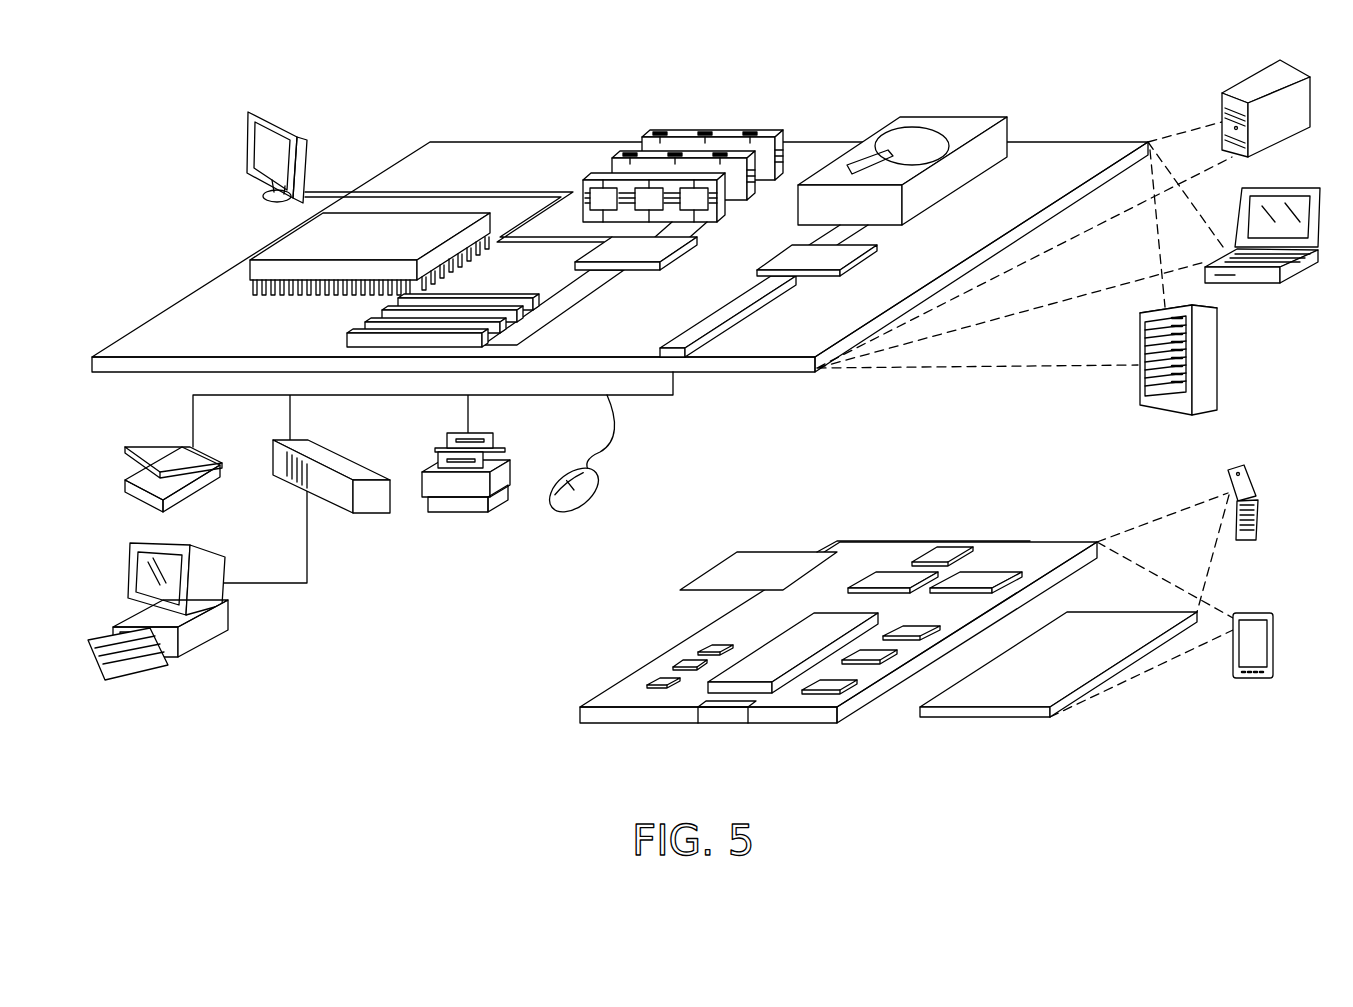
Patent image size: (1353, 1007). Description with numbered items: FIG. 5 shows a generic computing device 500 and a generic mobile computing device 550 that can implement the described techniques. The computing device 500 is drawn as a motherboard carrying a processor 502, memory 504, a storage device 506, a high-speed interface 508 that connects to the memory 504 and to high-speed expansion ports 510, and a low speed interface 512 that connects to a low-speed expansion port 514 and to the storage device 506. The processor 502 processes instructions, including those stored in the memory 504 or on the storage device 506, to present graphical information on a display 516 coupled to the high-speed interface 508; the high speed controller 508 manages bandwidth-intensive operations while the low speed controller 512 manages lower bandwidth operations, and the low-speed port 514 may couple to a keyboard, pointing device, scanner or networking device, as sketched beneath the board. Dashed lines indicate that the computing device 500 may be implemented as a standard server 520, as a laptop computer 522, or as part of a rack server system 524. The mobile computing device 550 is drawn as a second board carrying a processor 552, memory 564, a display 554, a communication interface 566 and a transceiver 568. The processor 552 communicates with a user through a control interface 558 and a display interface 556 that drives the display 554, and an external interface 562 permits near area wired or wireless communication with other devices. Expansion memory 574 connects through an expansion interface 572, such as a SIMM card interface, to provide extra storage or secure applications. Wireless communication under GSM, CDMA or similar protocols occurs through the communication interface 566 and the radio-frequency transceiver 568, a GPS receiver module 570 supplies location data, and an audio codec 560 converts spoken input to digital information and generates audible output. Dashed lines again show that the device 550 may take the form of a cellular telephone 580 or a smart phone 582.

The computing device 500 is at (379, 88).
The processor 502 is at (275, 243).
The memory 504 is at (715, 133).
The storage device 506 is at (943, 118).
The high-speed interface 508 is at (650, 247).
The high-speed expansion ports 510 is at (373, 320).
The low speed interface 512 is at (792, 253).
The low-speed expansion port 514 is at (680, 347).
The display 516 is at (252, 112).
The standard server 520 is at (1243, 90).
The laptop computer 522 is at (1294, 188).
The rack server system 524 is at (1218, 360).
The mobile computing device 550 is at (534, 734).
The processor 552 is at (763, 658).
The display 554 is at (1097, 625).
The display interface 556 is at (847, 685).
The control interface 558 is at (877, 657).
The audio codec 560 is at (915, 628).
The external interface 562 is at (725, 708).
The memory 564 is at (680, 667).
The communication interface 566 is at (893, 572).
The radio-frequency transceiver 568 is at (983, 572).
The GPS receiver module 570 is at (943, 550).
The expansion interface 572 is at (817, 552).
The expansion memory 574 is at (737, 552).
The cellular telephone 580 is at (1240, 468).
The smart phone 582 is at (1247, 613).